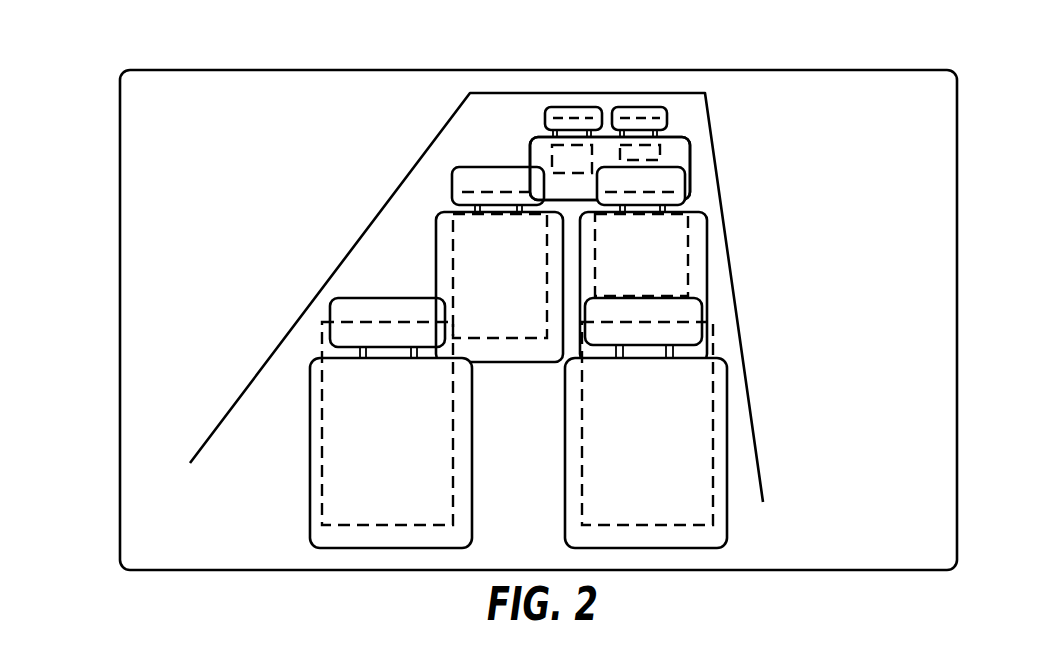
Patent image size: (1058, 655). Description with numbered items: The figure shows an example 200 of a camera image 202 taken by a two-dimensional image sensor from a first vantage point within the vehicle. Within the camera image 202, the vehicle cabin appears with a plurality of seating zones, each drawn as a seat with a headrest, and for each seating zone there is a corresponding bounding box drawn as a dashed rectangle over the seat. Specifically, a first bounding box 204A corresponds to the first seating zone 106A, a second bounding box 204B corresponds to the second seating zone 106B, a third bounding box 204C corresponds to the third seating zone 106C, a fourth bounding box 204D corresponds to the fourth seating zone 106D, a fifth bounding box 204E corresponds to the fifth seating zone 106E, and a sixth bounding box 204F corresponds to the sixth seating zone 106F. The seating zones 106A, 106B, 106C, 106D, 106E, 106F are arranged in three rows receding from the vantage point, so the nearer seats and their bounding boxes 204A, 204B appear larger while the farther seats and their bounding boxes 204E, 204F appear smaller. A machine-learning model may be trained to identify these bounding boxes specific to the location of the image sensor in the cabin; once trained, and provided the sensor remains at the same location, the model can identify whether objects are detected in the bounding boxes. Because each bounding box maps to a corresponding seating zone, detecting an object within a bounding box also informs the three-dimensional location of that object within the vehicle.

The example 200 is at (168, 33).
The camera image 202 is at (845, 70).
The first seating zone 106A is at (670, 462).
The second seating zone 106B is at (413, 462).
The third seating zone 106C is at (666, 244).
The fourth seating zone 106D is at (521, 244).
The fifth seating zone 106E is at (653, 157).
The sixth seating zone 106F is at (553, 157).
The first bounding box 204A is at (712, 410).
The second bounding box 204B is at (322, 342).
The third bounding box 204C is at (690, 240).
The fourth bounding box 204D is at (445, 222).
The fifth bounding box 204E is at (662, 152).
The sixth bounding box 204F is at (577, 157).